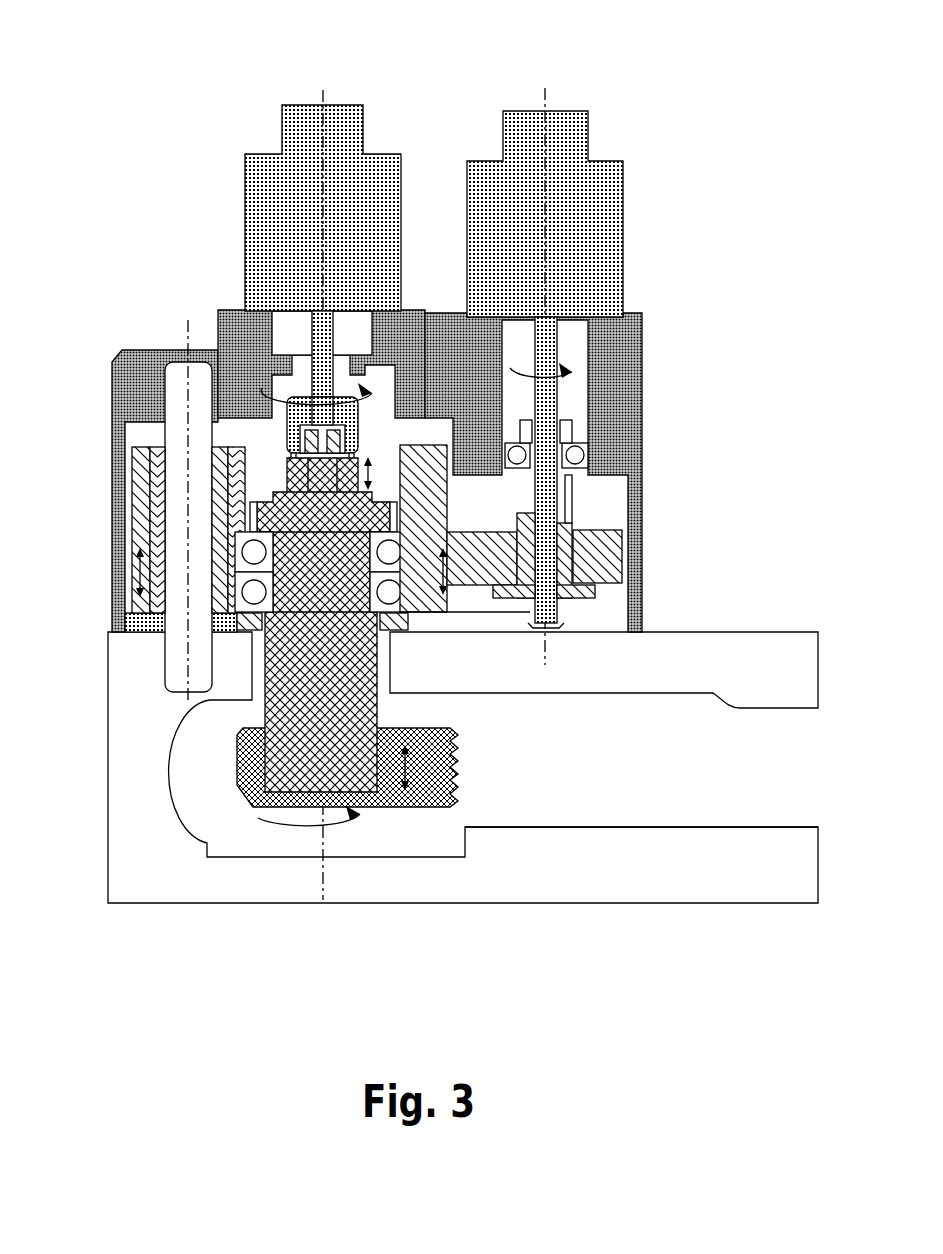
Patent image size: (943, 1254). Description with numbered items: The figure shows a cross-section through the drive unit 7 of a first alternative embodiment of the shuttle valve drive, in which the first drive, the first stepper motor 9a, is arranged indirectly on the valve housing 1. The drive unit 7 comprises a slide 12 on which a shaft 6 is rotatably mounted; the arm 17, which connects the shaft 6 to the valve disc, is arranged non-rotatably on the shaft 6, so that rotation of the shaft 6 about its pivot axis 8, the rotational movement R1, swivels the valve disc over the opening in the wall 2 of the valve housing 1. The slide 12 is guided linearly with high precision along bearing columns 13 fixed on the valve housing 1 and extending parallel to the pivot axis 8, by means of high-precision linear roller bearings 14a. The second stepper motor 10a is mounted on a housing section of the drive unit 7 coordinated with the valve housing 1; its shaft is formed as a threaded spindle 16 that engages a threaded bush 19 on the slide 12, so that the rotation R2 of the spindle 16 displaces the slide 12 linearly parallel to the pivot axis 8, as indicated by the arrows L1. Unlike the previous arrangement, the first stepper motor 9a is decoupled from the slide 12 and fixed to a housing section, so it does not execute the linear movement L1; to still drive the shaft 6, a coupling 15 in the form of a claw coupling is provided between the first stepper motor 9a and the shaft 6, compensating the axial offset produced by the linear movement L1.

The valve housing 1 is at (135, 660).
The wall 2 is at (683, 827).
The shaft 6 is at (295, 708).
The drive unit 7 is at (118, 293).
The pivot axis 8 is at (323, 95).
The first stepper motor 9a is at (265, 197).
The second stepper motor 10a is at (607, 205).
The slide 12 is at (139, 463).
The bearing columns 13 is at (180, 513).
The linear roller bearings 14a is at (155, 542).
The coupling 15 is at (293, 440).
The threaded spindle 16 is at (550, 510).
The arm 17 is at (440, 795).
The threaded bush 19 is at (565, 523).
The linear movement L1 is at (442, 575).
The rotational movement R1 is at (328, 840).
The rotation of the threaded spindle R2 is at (577, 378).